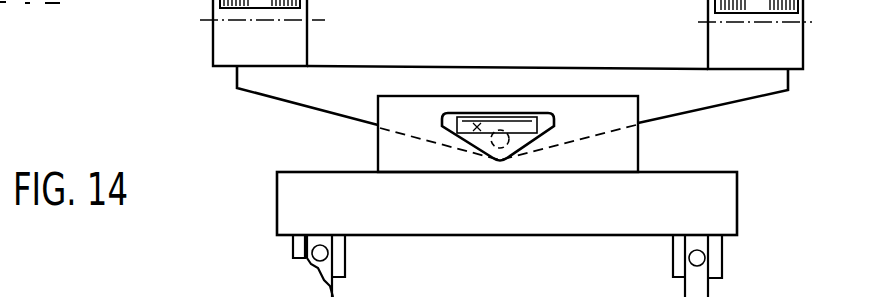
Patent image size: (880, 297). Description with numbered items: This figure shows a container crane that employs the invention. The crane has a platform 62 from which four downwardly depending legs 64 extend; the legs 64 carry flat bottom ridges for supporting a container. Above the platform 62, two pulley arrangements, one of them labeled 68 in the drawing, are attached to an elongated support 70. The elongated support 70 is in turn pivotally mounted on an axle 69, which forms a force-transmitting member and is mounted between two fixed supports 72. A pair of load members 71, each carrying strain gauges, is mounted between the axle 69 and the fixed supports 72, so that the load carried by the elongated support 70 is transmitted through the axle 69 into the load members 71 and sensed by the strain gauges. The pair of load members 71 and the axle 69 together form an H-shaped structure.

The platform 62 is at (277, 202).
The legs 64 is at (345, 277).
The head block 68 is at (706, 3).
The axle 69 is at (500, 146).
The elongated support 70 is at (511, 66).
The load members 71 is at (525, 126).
The fixed supports 72 is at (378, 144).